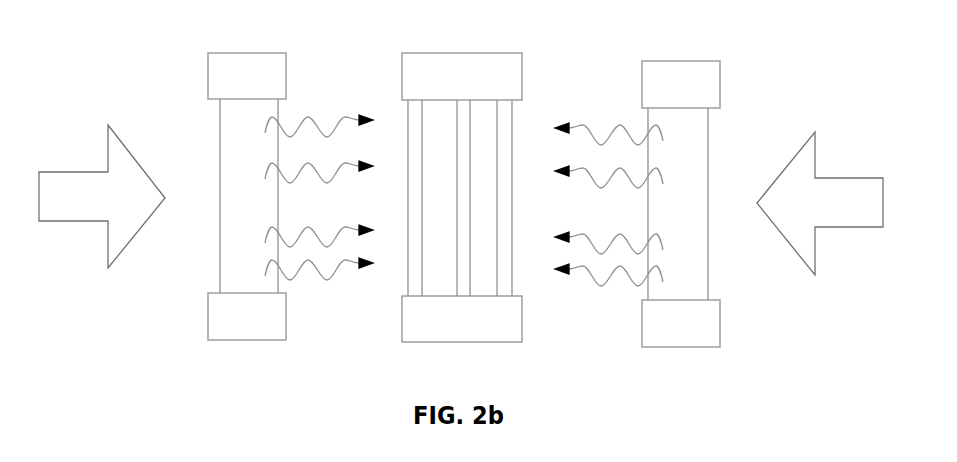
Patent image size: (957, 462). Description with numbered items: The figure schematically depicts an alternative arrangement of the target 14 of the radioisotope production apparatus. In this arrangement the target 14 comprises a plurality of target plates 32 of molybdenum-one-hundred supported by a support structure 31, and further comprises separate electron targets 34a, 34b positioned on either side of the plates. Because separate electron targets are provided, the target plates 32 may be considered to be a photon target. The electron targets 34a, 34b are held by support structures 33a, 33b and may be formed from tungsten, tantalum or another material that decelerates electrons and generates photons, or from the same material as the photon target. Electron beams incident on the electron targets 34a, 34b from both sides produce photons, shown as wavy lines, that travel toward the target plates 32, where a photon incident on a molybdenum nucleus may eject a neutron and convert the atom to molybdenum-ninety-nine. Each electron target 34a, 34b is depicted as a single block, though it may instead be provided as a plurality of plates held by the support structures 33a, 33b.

The target 14 is at (145, 74).
The support structure 31 is at (462, 197).
The target plates 32 is at (417, 173).
The support structure 33a is at (247, 196).
The support structure 33b is at (681, 204).
The electron target 34a is at (268, 128).
The electron target 34b is at (658, 130).